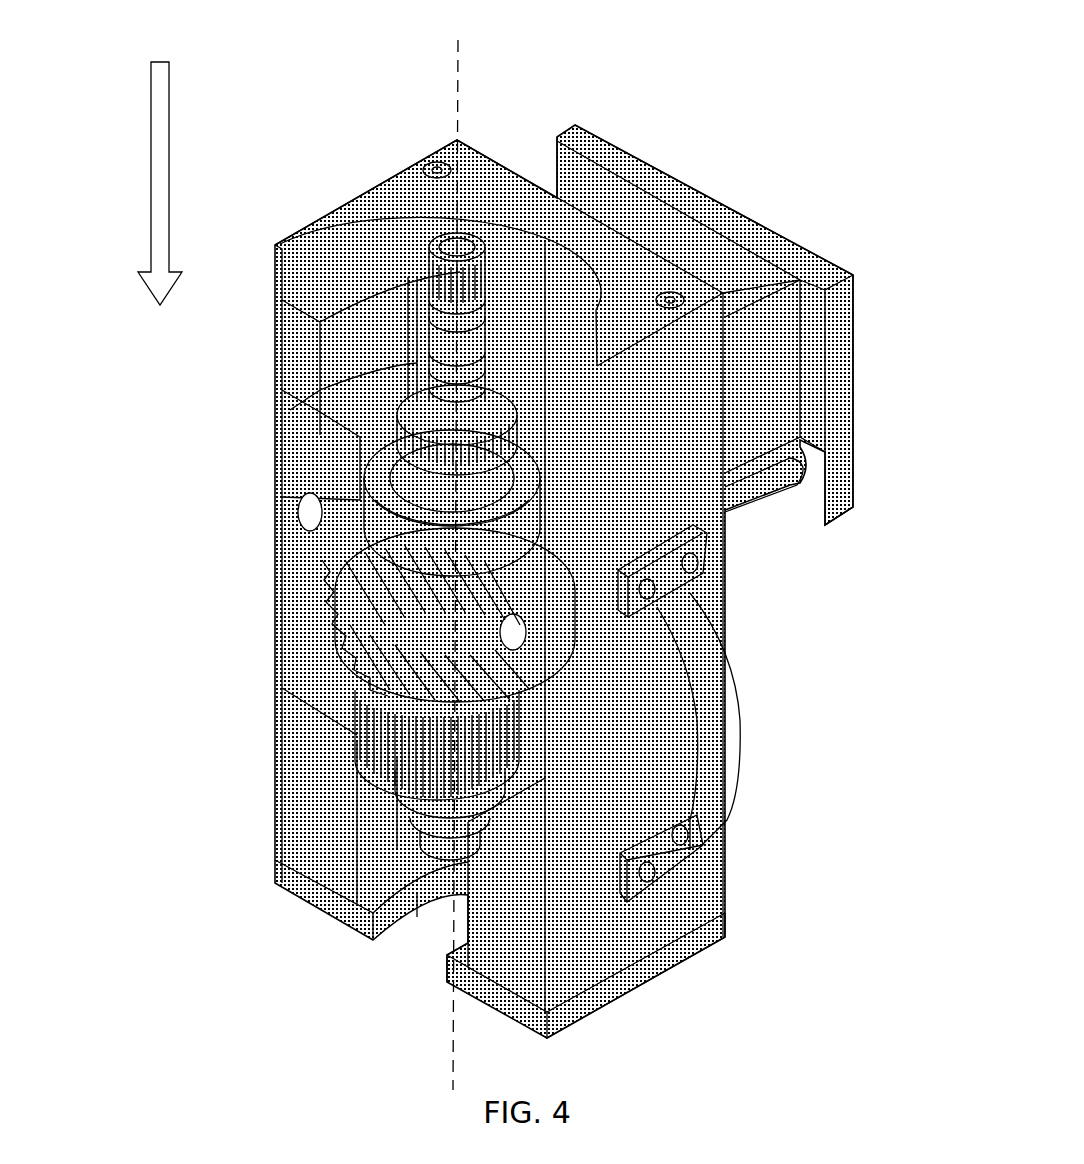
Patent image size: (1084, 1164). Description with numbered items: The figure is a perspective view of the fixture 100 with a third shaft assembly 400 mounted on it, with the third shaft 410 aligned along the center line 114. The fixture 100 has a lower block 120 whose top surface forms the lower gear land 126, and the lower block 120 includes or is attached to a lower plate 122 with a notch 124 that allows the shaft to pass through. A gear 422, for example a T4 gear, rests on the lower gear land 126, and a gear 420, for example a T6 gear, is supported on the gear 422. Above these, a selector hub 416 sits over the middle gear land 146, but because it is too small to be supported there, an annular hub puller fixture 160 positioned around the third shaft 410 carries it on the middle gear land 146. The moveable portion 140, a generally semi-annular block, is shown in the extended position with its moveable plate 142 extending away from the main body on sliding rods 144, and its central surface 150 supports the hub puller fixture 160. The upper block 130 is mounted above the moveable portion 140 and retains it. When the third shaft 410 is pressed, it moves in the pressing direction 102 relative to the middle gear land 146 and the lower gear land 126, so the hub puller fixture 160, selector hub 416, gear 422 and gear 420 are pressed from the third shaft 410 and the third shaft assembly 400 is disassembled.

The fixture 100 is at (824, 83).
The pressing direction 102 is at (148, 135).
The center line 114 is at (458, 78).
The lower block 120 is at (720, 882).
The lower plate 122 is at (720, 928).
The notch 124 is at (393, 920).
The lower gear land 126 is at (315, 718).
The upper block 130 is at (707, 337).
The moveable portion 140 is at (652, 218).
The moveable plate 142 is at (768, 233).
The sliding rods 144 is at (760, 507).
The middle gear land 146 is at (323, 468).
The central surface 150 is at (546, 335).
The hub puller fixture 160 is at (363, 537).
The third shaft assembly 400 is at (325, 97).
The third shaft 410 is at (435, 245).
The selector hub 416 is at (397, 432).
The gear 420 is at (360, 578).
The gear 422 is at (357, 705).